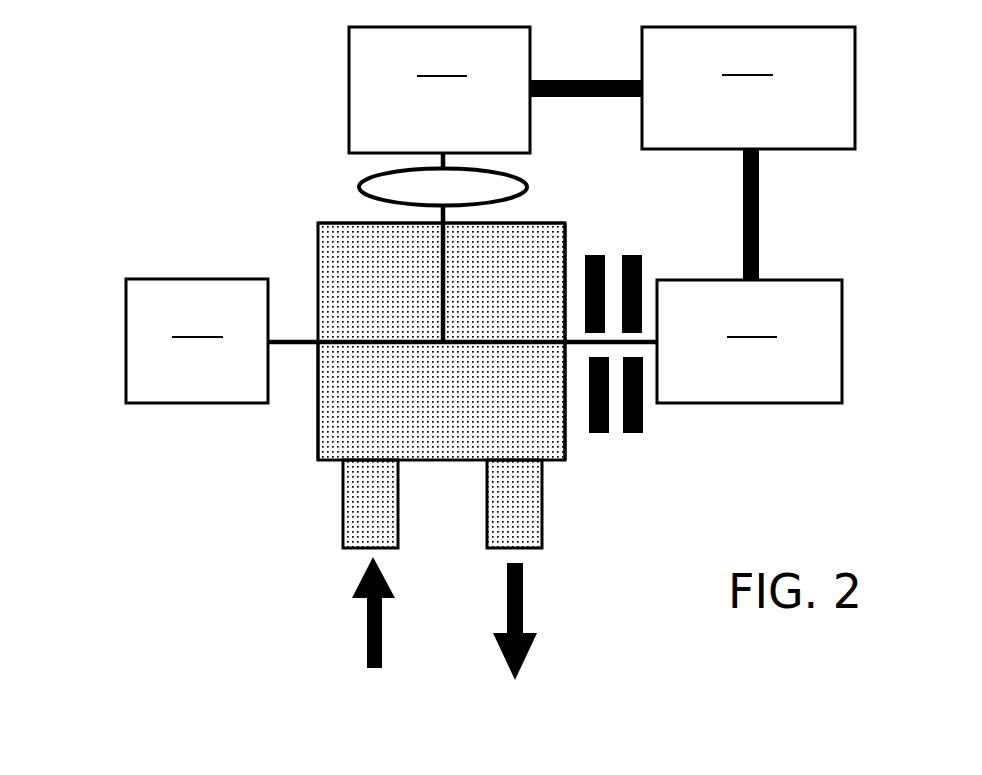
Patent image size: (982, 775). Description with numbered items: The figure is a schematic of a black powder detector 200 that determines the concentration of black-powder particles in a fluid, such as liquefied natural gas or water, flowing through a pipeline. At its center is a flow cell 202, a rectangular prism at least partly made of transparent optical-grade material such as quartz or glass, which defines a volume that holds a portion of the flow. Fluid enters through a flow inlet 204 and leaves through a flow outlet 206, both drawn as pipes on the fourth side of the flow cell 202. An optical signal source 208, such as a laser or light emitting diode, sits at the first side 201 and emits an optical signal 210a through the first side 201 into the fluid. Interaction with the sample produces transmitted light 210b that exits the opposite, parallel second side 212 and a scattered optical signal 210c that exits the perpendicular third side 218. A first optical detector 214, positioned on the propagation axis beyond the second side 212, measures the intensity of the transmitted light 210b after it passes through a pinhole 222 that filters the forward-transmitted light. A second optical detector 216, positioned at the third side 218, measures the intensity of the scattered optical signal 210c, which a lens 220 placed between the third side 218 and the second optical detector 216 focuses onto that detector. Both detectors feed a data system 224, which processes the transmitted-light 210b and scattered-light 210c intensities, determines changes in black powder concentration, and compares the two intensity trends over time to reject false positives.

The black powder detector 200 is at (120, 175).
The first side 201 is at (317, 410).
The flow cell 202 is at (382, 395).
The flow inlet 204 is at (367, 625).
The flow outlet 206 is at (525, 612).
The optical signal source 208 is at (197, 341).
The optical signal 210a is at (368, 340).
The transmitted light 210b is at (518, 343).
The scattered optical signal 210c is at (448, 285).
The second side 212 is at (565, 435).
The first optical detector 214 is at (749, 341).
The second optical detector 216 is at (495, 90).
The third side 218 is at (527, 222).
The lens 220 is at (360, 188).
The pinhole 222 is at (598, 253).
The data system 224 is at (748, 153).